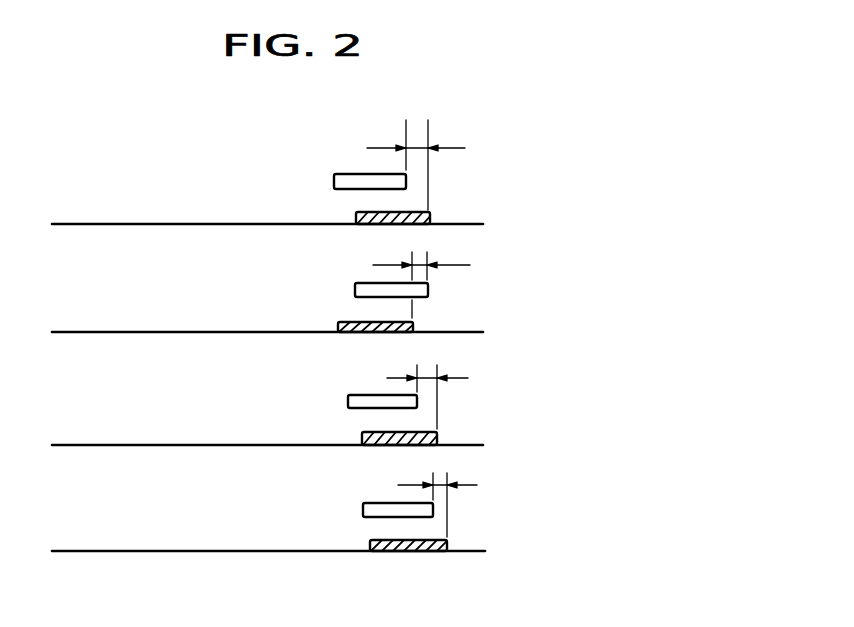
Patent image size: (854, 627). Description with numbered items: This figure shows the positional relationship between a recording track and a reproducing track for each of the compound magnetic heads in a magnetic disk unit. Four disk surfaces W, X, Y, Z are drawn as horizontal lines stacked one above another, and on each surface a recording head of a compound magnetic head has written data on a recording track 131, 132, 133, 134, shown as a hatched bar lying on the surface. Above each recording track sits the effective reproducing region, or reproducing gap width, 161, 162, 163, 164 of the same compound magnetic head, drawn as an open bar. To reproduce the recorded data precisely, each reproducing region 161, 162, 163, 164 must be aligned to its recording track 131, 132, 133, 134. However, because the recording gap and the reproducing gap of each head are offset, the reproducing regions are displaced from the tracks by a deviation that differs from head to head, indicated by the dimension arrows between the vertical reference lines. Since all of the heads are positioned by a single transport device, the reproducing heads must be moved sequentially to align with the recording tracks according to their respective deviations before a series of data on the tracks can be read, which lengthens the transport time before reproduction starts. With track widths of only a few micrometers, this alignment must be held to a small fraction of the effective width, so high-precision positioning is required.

The recording track 131 is at (445, 220).
The recording track 132 is at (413, 323).
The recording track 133 is at (440, 438).
The recording track 134 is at (450, 546).
The effective reproducing region 161 is at (347, 174).
The effective reproducing region 162 is at (357, 283).
The effective reproducing region 163 is at (365, 395).
The effective reproducing region 164 is at (385, 503).
The surface of magnetic disk W is at (94, 223).
The surface of magnetic disk X is at (100, 332).
The surface of magnetic disk Y is at (105, 445).
The surface of magnetic disk Z is at (105, 551).